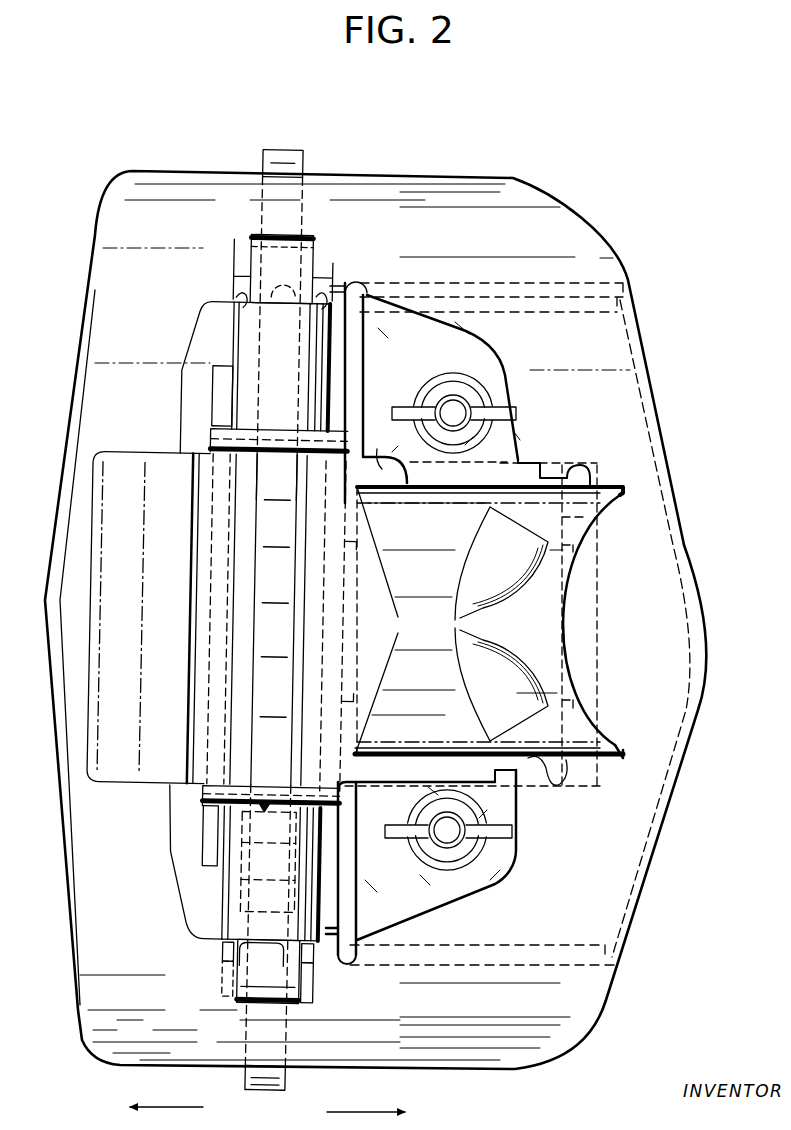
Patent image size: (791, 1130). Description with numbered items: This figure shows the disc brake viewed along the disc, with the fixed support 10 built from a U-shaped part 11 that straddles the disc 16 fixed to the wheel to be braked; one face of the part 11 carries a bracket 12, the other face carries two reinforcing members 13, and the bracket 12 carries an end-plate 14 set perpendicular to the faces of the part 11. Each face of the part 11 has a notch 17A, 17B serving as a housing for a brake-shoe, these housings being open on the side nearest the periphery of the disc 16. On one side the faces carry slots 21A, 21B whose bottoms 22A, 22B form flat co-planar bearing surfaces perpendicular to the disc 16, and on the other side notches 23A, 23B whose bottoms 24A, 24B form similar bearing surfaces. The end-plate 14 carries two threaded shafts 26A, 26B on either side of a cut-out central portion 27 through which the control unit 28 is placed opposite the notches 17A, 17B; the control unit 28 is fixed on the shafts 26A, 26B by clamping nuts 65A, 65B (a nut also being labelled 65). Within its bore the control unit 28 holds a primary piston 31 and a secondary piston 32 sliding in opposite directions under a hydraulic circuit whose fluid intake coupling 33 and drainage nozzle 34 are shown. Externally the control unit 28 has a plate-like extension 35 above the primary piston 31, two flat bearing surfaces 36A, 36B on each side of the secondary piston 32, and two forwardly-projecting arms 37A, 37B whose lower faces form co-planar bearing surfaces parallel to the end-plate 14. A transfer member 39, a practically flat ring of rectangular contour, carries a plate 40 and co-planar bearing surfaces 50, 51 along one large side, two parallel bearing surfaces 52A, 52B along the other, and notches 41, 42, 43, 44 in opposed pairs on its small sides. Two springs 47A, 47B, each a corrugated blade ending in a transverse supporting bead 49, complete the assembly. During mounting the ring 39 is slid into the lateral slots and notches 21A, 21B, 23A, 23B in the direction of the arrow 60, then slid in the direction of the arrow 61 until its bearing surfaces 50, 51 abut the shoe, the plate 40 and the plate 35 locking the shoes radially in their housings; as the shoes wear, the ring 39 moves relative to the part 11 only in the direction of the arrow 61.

The fixed support 10 is at (344, 270).
The U-shaped part 11 is at (237, 340).
The bracket 12 is at (338, 856).
The reinforcing members 13 is at (220, 393).
The end-plate 14 is at (483, 347).
The disc 16 is at (288, 146).
The notch 17A is at (318, 440).
The notch 17B is at (254, 426).
The slot 21A is at (230, 969).
The slot 21B is at (309, 996).
The bottom of slot 22A is at (228, 946).
The bottom of slot 22B is at (332, 942).
The notch 23A is at (241, 262).
The notch 23B is at (321, 277).
The bottom of notch 24A is at (241, 304).
The bottom of notch 24B is at (316, 307).
The threaded shaft 26A is at (446, 842).
The threaded shaft 26B is at (451, 407).
The cut-out central portion 27 is at (381, 447).
The control unit 28 is at (412, 628).
The primary piston 31 is at (352, 653).
The secondary piston 32 is at (569, 623).
The fluid intake coupling 33 is at (497, 718).
The drainage nozzle 34 is at (527, 539).
The extension 35 is at (356, 613).
The flat bearing surface 36A is at (550, 752).
The flat bearing surface 36B is at (571, 477).
The forwardly-projecting arm 37A is at (621, 742).
The forwardly-projecting arm 37B is at (609, 511).
The transfer member 39 is at (568, 202).
The plate 40 is at (205, 788).
The notch 41 is at (262, 957).
The notch 42 is at (344, 966).
The notch 43 is at (273, 285).
The notch 44 is at (363, 276).
The spring 47A is at (268, 857).
The spring 47B is at (276, 463).
The transverse supporting bead 49 is at (303, 461).
The bearing surface 50 is at (207, 726).
The bearing surface 51 is at (205, 513).
The bearing surface 52A is at (548, 795).
The bearing surface 52B is at (534, 477).
The arrow 60 is at (169, 1106).
The arrow 61 is at (364, 1111).
The spring clip 65 is at (566, 787).
The clamping nut 65A is at (500, 844).
The clamping nut 65B is at (498, 418).